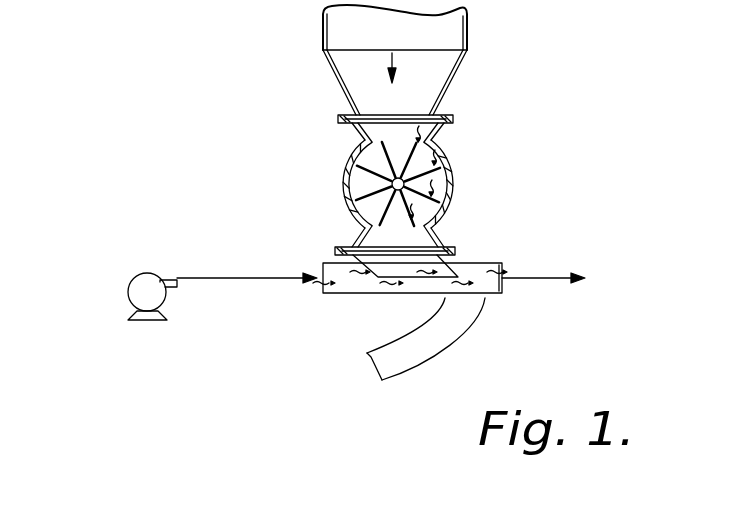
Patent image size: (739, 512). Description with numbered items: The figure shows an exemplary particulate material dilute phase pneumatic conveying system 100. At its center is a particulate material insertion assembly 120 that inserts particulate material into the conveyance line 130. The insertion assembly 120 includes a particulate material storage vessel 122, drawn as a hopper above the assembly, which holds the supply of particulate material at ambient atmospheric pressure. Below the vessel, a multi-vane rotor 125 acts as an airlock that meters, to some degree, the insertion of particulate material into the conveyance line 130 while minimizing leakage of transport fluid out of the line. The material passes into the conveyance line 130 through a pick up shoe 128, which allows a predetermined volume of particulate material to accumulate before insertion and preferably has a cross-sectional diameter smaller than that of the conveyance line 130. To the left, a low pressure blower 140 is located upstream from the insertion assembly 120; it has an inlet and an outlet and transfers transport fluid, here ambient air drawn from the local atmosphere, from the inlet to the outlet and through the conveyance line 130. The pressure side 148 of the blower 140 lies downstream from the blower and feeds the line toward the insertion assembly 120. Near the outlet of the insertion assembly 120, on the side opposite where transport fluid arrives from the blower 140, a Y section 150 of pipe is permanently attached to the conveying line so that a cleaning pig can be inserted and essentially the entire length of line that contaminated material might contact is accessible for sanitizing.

The particulate material dilute phase pneumatic conveying system 100 is at (182, 193).
The particulate material insertion assembly 120 is at (343, 163).
The particulate material storage vessel 122 is at (462, 70).
The multi-vane rotor 125 is at (444, 157).
The pick up shoe 128 is at (453, 243).
The conveyance line 130 is at (412, 287).
The low pressure blower 140 is at (148, 322).
The pressure side 148 is at (240, 280).
The Y section 150 is at (448, 322).